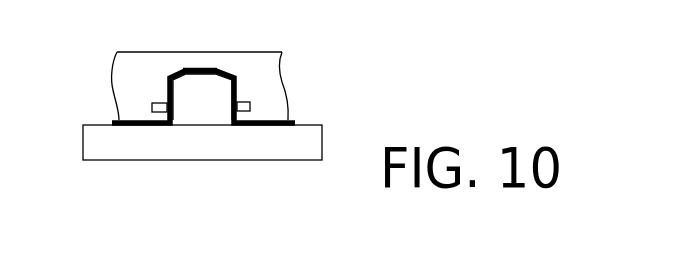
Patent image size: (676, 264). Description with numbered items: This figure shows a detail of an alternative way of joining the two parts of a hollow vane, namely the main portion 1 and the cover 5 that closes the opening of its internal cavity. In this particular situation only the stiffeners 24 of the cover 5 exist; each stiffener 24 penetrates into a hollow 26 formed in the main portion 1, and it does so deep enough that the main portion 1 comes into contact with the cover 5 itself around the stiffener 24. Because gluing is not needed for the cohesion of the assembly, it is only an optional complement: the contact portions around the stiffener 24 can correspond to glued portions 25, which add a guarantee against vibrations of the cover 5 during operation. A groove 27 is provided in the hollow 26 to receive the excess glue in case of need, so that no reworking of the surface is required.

The main portion 1 is at (241, 66).
The cover 5 is at (277, 152).
The stiffener 24 is at (200, 108).
The glued portion 25 is at (200, 68).
The hollow 26 is at (168, 87).
The groove 27 is at (152, 107).